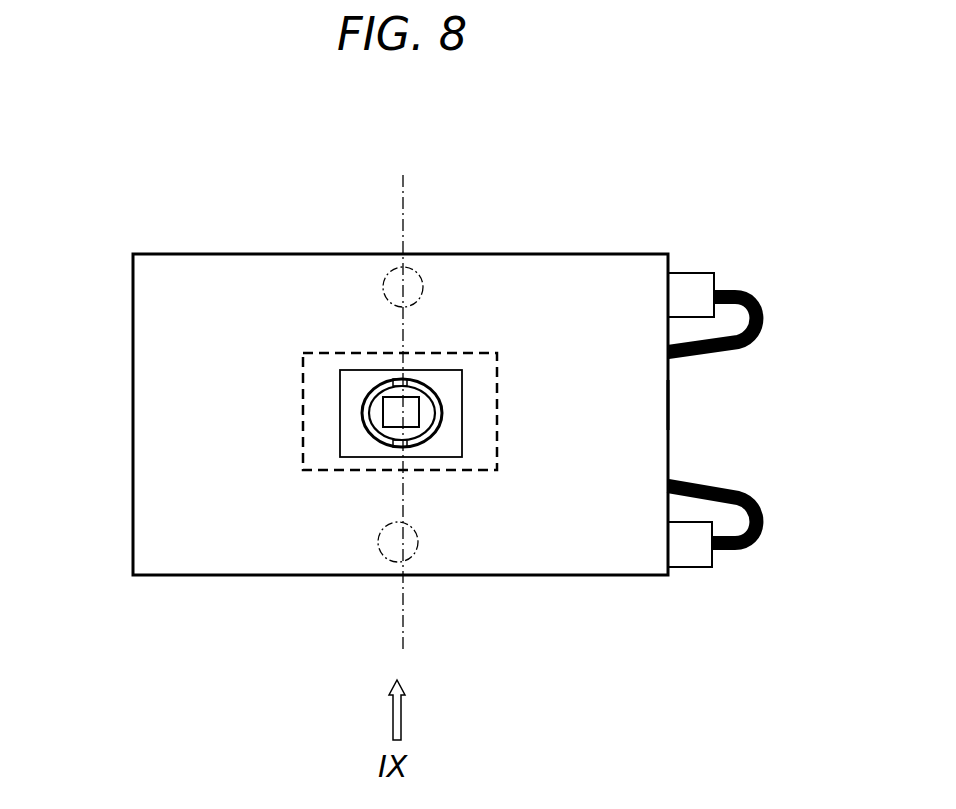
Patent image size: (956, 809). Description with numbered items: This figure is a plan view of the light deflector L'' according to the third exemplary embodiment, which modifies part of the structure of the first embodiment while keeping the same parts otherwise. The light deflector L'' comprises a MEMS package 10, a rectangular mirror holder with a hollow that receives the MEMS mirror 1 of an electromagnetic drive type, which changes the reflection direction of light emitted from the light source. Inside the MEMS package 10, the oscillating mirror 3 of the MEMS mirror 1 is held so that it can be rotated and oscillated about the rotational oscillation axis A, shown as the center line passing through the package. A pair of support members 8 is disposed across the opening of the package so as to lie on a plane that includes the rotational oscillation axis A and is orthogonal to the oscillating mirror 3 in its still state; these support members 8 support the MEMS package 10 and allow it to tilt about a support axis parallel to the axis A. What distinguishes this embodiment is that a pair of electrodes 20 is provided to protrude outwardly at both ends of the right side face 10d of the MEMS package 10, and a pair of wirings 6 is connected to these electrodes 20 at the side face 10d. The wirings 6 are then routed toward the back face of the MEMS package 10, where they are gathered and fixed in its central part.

The MEMS mirror 1 is at (300, 416).
The oscillating mirror 3 is at (362, 420).
The wiring 6 is at (762, 317).
The support member 8 is at (384, 285).
The MEMS package 10 is at (133, 385).
The right side face 10d is at (668, 404).
The electrode 20 is at (707, 273).
The rotational oscillation axis A is at (403, 210).
The light deflector L'' is at (604, 207).